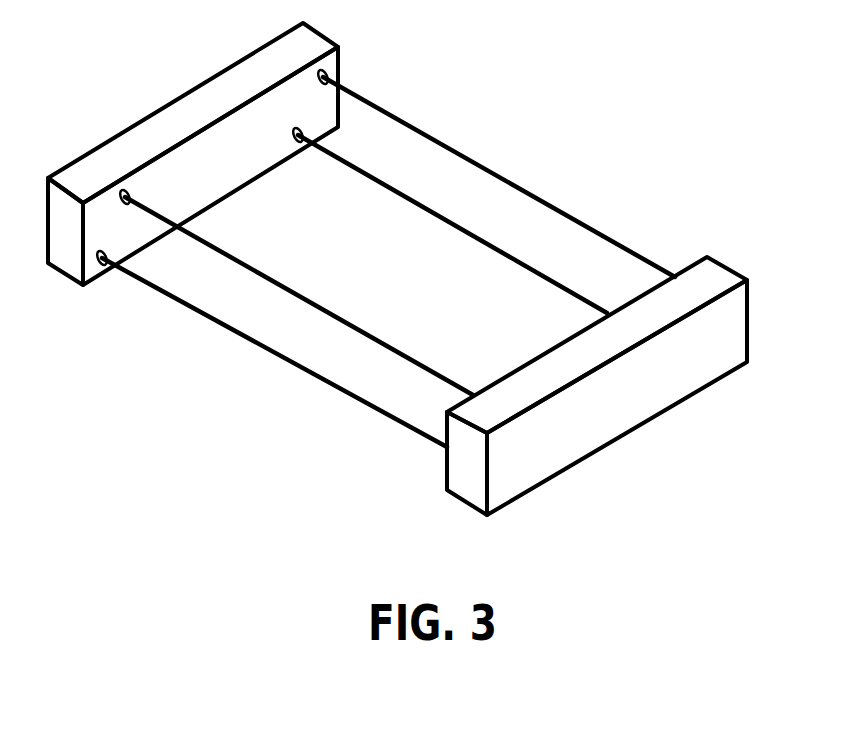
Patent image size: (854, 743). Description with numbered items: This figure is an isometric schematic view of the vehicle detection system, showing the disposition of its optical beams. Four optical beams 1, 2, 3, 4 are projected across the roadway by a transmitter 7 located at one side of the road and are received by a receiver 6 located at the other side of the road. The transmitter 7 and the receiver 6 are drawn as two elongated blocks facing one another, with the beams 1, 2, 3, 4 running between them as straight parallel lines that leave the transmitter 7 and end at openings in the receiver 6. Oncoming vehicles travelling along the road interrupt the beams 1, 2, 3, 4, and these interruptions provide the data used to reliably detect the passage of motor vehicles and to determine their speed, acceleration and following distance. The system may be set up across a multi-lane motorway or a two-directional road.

The optical beam 1 is at (248, 347).
The optical beam 2 is at (322, 310).
The optical beam 3 is at (472, 237).
The optical beam 4 is at (547, 207).
The receiver 6 is at (200, 127).
The transmitter 7 is at (658, 402).